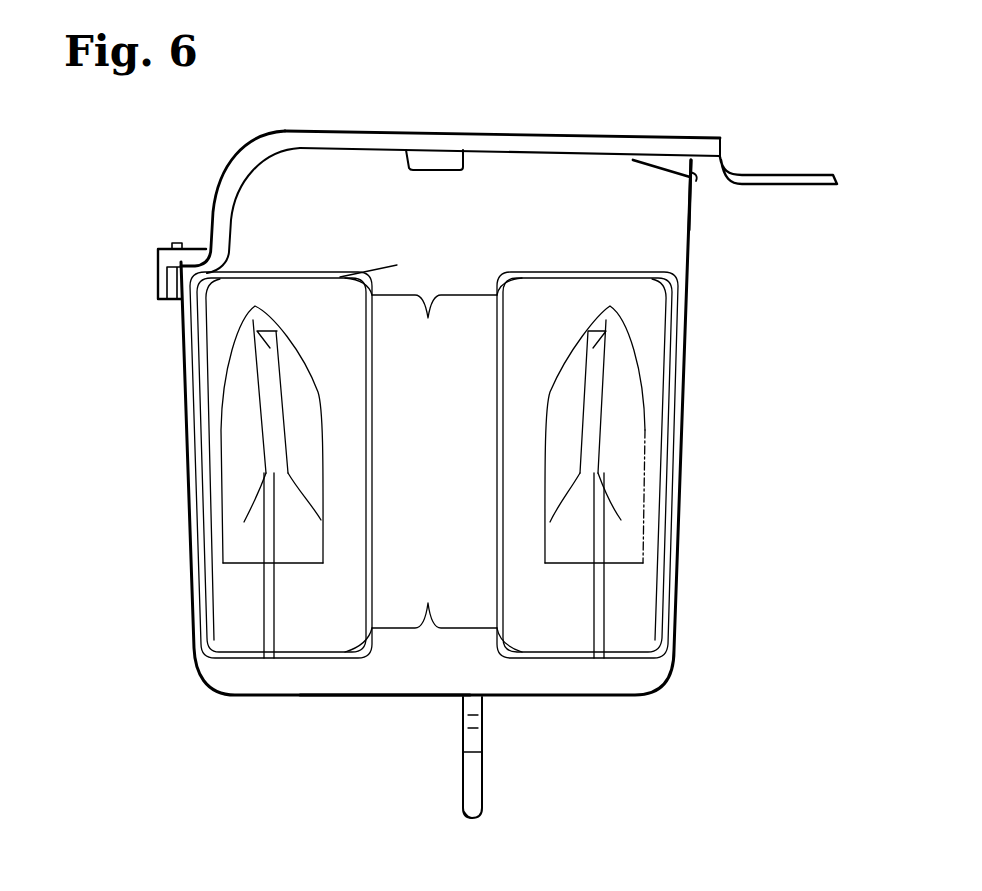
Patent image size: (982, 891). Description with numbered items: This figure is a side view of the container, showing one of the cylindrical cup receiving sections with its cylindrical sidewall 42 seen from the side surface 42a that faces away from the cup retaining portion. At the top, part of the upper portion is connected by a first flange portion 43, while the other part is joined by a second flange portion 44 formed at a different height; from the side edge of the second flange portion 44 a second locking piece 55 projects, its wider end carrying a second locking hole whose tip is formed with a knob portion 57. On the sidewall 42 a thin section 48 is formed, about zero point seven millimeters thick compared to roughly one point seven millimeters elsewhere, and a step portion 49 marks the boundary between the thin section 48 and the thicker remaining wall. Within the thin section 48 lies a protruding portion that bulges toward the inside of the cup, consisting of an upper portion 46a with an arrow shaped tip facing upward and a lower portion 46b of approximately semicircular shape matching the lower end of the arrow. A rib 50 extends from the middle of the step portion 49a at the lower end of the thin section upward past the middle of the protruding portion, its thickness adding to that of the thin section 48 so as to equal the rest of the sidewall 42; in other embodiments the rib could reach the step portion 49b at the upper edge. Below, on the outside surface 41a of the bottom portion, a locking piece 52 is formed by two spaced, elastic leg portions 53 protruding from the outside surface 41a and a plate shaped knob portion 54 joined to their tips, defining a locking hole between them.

The outside surface of the bottom portion 41a is at (386, 697).
The cylindrical sidewall 42 is at (653, 194).
The side surface of the sidewall 42a is at (657, 249).
The first flange portion 43 is at (190, 245).
The second flange portion 44 is at (498, 136).
The upper portion of the protruding portion 46a is at (243, 378).
The lower portion of the protruding portion 46b is at (257, 537).
The thin section 48 is at (237, 627).
The step portion 49 is at (681, 291).
The step portion on the lower end of the thin section 49a is at (434, 602).
The step portion on the upper portion of the thin section 49b is at (434, 324).
The rib 50 is at (287, 413).
The locking piece 52 is at (486, 828).
The leg portion 53 is at (480, 723).
The knob portion 54 is at (482, 787).
The second locking piece 55 is at (764, 140).
The knob portion 57 is at (805, 172).